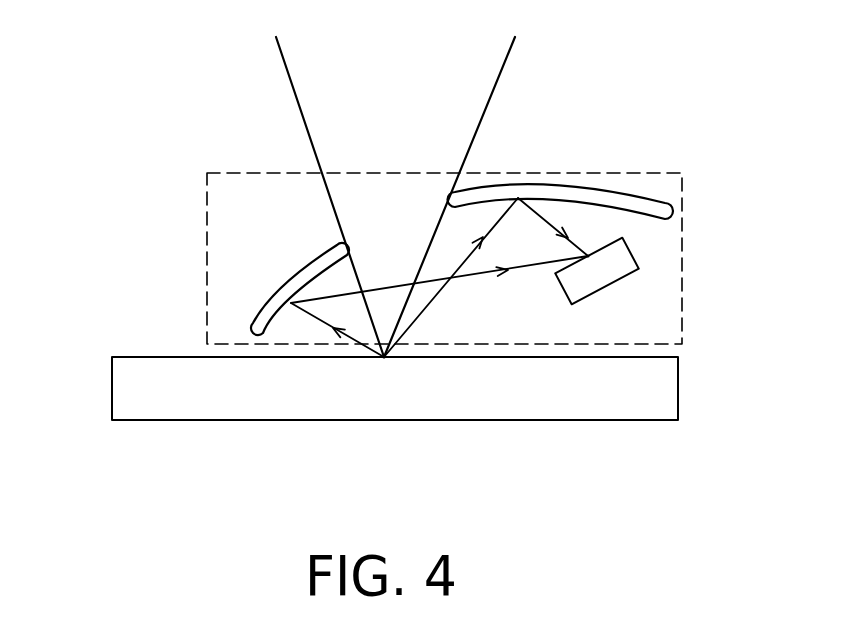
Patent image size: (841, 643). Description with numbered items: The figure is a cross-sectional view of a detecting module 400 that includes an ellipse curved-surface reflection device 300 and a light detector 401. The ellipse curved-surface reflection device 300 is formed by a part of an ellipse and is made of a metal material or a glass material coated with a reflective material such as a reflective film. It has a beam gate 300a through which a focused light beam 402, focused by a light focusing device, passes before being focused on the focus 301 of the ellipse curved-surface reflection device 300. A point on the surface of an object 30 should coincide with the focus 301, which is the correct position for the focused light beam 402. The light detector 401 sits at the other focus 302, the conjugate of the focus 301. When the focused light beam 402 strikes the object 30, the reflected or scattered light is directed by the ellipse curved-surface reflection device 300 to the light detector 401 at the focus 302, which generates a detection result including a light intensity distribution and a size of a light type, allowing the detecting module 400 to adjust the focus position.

The focused light beam 402 is at (328, 100).
The beam gate 300a is at (386, 218).
The ellipse curved-surface reflection device 300 is at (555, 192).
The detecting module 400 is at (653, 173).
The light detector 401 is at (607, 263).
The object 30 is at (158, 393).
The focus 301 is at (383, 360).
The focus 302 is at (589, 260).